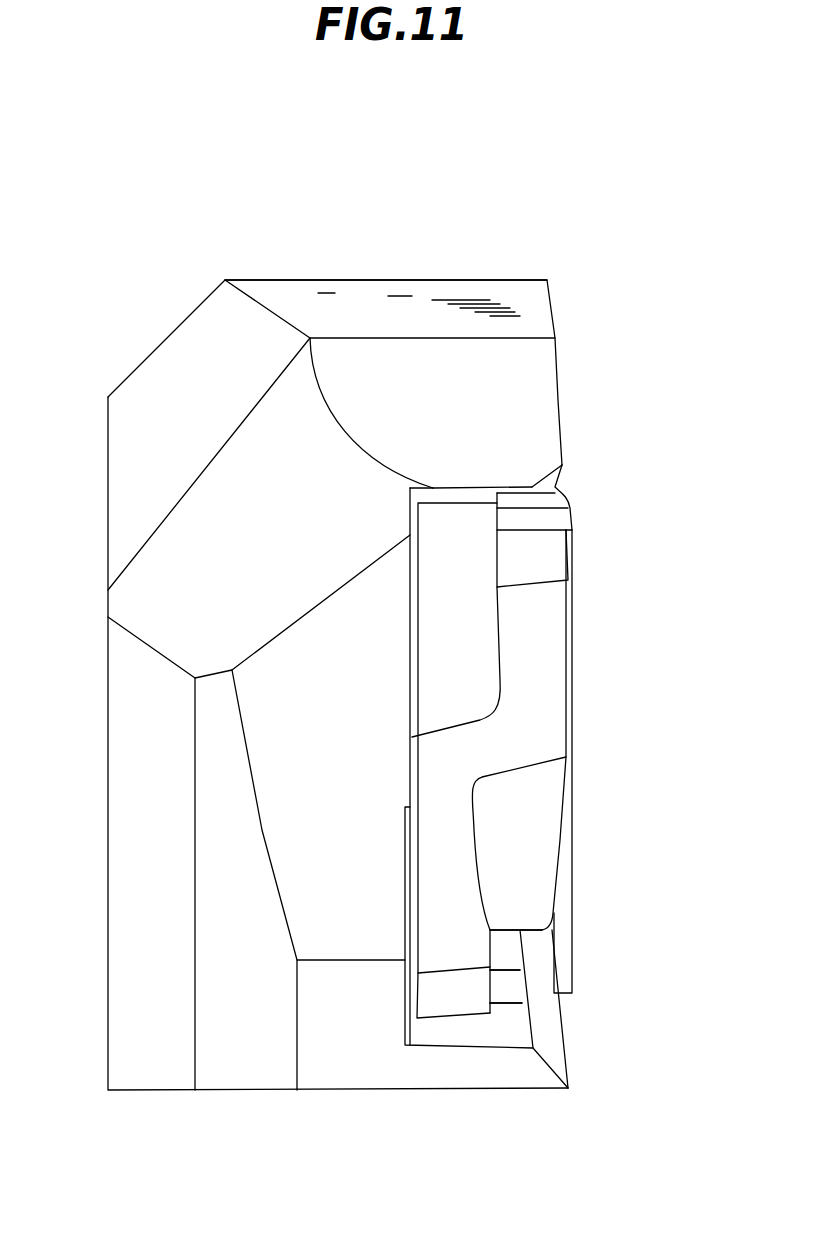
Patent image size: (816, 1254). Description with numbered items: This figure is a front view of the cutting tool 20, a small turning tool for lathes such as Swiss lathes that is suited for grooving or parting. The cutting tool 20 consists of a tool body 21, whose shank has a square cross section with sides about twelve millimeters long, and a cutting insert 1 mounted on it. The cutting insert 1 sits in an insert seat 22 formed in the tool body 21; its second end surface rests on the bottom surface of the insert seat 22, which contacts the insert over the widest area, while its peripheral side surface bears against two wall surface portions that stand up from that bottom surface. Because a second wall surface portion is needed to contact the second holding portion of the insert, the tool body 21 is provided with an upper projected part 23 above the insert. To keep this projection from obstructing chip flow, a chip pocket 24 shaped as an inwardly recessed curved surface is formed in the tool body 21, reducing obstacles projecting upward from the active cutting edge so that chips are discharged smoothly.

The cutting insert 1 is at (578, 622).
The cutting tool 20 is at (128, 360).
The tool body 21 is at (315, 307).
The insert seat 22 is at (500, 958).
The upper projected part 23 is at (403, 312).
The chip pocket 24 is at (468, 417).